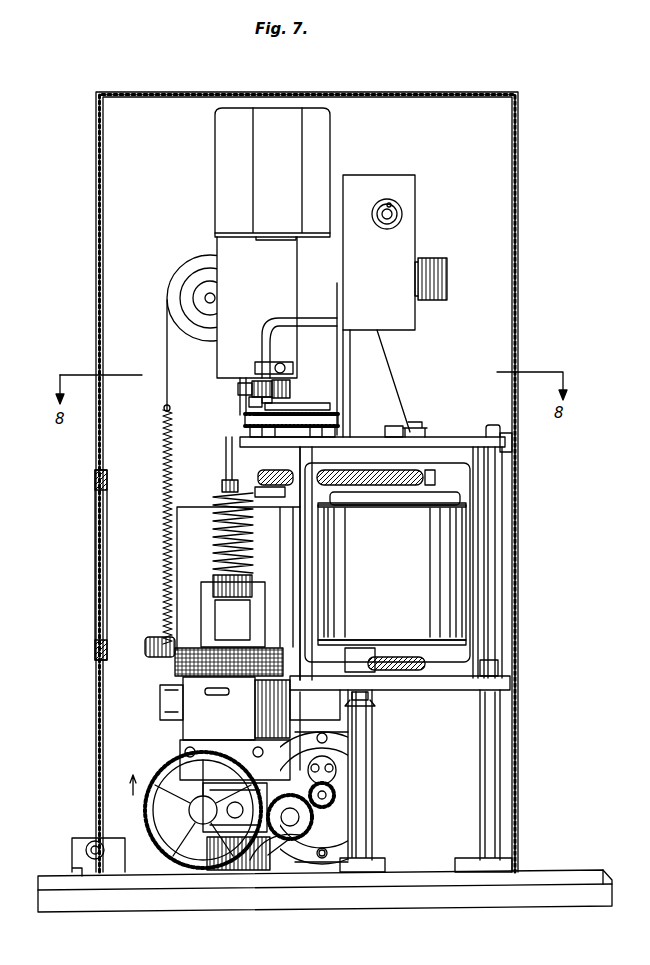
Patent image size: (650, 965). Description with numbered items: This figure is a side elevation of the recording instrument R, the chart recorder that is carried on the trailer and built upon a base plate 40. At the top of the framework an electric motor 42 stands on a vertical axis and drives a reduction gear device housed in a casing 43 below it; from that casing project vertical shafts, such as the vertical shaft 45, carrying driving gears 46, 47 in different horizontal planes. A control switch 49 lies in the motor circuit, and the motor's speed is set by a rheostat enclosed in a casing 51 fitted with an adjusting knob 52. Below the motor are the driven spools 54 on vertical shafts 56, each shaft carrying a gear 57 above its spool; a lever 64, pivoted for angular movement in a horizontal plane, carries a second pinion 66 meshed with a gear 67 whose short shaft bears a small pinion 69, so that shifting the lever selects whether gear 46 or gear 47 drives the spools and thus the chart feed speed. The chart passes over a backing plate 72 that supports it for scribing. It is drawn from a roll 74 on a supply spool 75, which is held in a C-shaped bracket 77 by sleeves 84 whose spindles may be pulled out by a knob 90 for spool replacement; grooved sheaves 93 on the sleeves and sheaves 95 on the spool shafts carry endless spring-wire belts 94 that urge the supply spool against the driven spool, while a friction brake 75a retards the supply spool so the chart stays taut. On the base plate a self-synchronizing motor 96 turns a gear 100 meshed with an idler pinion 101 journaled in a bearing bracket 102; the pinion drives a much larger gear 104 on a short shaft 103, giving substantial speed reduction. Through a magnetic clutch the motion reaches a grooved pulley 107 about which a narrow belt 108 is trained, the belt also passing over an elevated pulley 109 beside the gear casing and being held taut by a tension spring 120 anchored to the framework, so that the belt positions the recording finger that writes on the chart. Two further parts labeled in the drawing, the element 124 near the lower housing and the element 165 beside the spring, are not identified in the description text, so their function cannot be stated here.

The recording instrument R is at (522, 210).
The base plate 40 is at (545, 876).
The electric motor 42 is at (328, 133).
The casing 43 is at (225, 351).
The vertical shaft 45 is at (249, 403).
The gear 46 is at (262, 420).
The gear 47 is at (238, 388).
The control switch 49 is at (402, 212).
The casing 51 is at (416, 236).
The adjusting knob 52 is at (440, 300).
The spool 54 is at (300, 498).
The vertical shaft 56 is at (307, 563).
The gear 57 is at (284, 480).
The lever 64 is at (295, 403).
The second pinion 66 is at (338, 420).
The gear 67 is at (262, 435).
The pinion 69 is at (294, 365).
The backing plate 72 is at (213, 517).
The roll 74 is at (450, 578).
The supply spool 75 is at (405, 505).
The friction brake 75a is at (355, 648).
The C-shaped bracket 77 is at (478, 600).
The sleeve 84 is at (470, 460).
The knob 90 is at (400, 425).
The grooved sheave 93 is at (430, 672).
The endless belt 94 is at (402, 672).
The sheave 95 is at (300, 740).
The self-synchronizing motor 96 is at (378, 800).
The gear 100 is at (334, 812).
The idler pinion 101 is at (318, 858).
The bearing bracket 102 is at (290, 860).
The short shaft 103 is at (190, 855).
The gear 104 is at (163, 850).
The grooved pulley 107 is at (160, 828).
The belt 108 is at (160, 384).
The pulley 109 is at (190, 272).
The tension spring 120 is at (163, 567).
The housing 124 is at (175, 720).
The bracket 165 is at (185, 618).